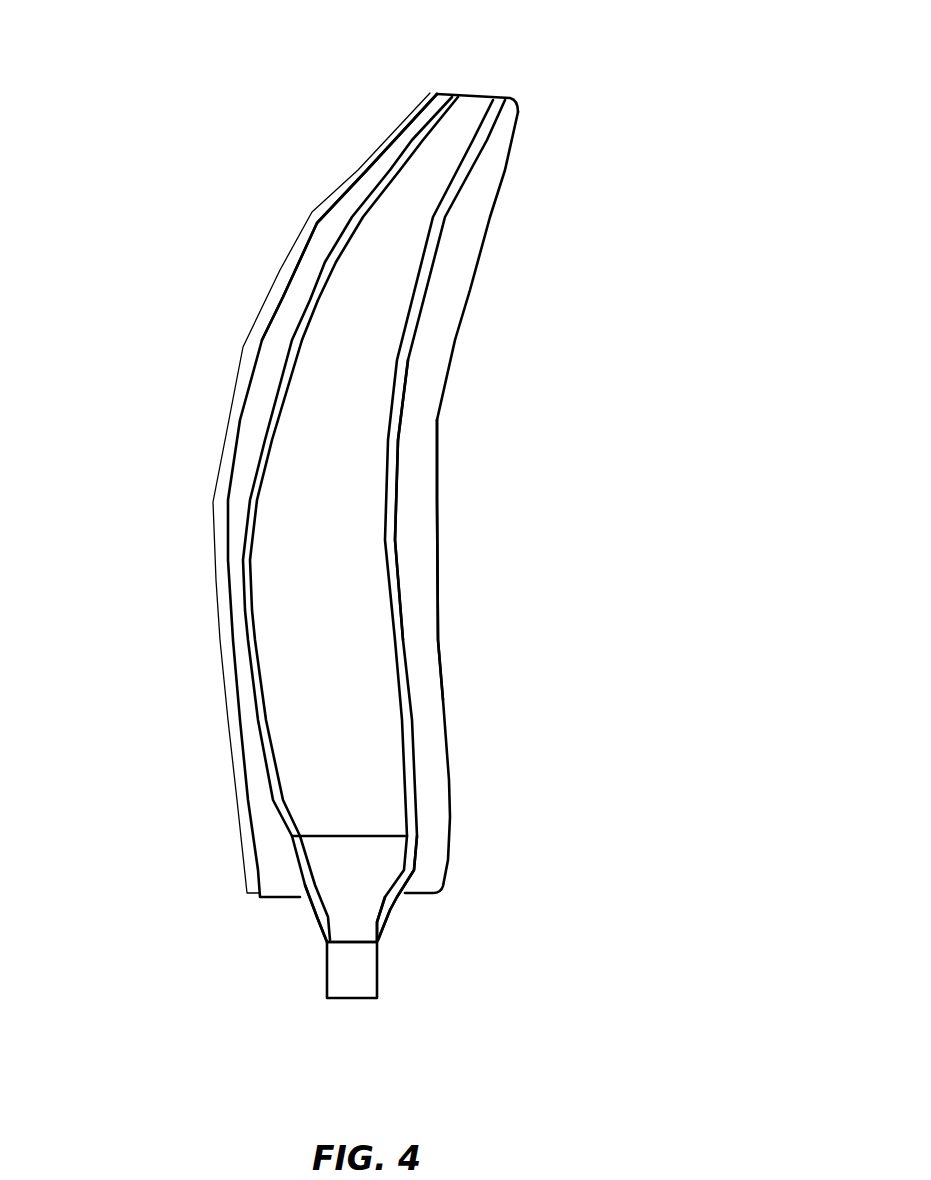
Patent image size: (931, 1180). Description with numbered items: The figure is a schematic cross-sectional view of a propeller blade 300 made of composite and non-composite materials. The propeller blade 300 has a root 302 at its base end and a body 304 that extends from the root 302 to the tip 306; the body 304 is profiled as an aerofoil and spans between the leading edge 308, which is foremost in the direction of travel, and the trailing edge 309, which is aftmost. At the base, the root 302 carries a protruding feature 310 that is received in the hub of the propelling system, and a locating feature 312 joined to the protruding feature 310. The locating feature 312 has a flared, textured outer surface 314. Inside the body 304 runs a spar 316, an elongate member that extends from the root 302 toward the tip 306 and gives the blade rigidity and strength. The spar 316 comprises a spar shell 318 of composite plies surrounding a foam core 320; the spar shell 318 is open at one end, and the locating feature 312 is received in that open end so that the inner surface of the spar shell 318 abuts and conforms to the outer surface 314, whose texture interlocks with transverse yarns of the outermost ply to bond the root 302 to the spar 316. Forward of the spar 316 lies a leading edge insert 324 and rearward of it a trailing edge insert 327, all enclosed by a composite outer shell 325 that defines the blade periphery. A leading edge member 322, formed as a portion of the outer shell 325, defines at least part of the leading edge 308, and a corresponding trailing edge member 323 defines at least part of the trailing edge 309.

The propeller blade 300 is at (153, 169).
The root 302 is at (333, 968).
The body 304 is at (415, 513).
The tip 306 is at (477, 98).
The leading edge 308 is at (222, 457).
The trailing edge 309 is at (450, 362).
The protruding feature 310 is at (368, 975).
The locating feature 312 is at (380, 868).
The outer surface 314 is at (390, 904).
The spar 316 is at (410, 713).
The spar shell 318 is at (413, 765).
The core 320 is at (310, 713).
The leading edge member 322 is at (226, 671).
The trailing edge member 323 is at (438, 435).
The leading edge insert 324 is at (275, 363).
The outer shell 325 is at (277, 290).
The trailing edge insert 327 is at (422, 585).